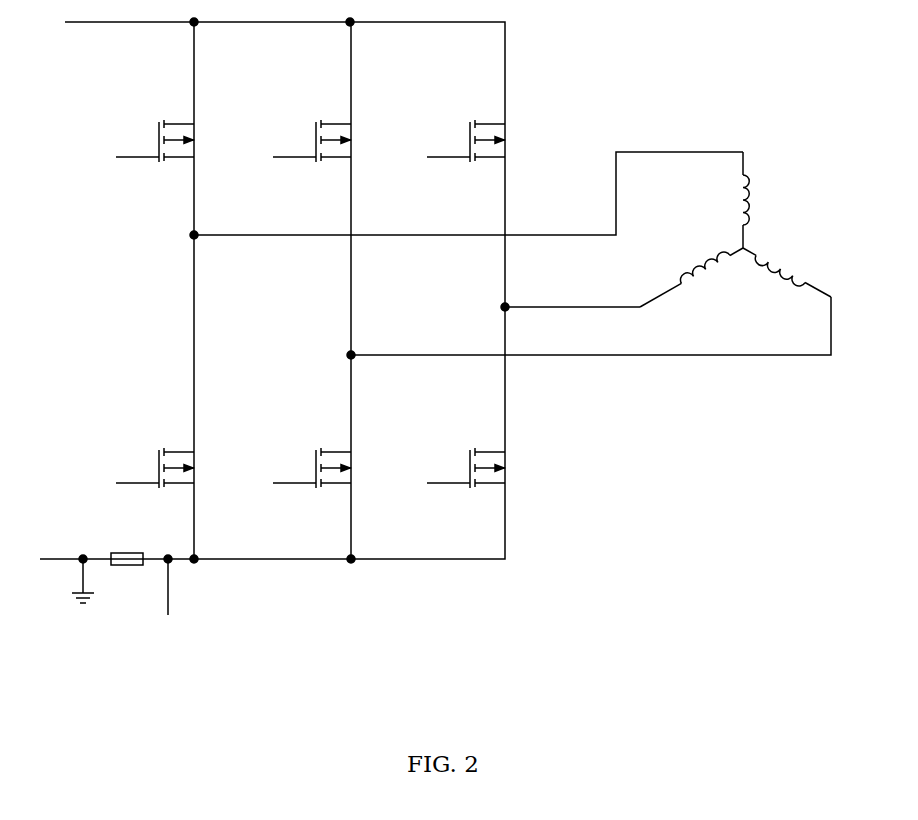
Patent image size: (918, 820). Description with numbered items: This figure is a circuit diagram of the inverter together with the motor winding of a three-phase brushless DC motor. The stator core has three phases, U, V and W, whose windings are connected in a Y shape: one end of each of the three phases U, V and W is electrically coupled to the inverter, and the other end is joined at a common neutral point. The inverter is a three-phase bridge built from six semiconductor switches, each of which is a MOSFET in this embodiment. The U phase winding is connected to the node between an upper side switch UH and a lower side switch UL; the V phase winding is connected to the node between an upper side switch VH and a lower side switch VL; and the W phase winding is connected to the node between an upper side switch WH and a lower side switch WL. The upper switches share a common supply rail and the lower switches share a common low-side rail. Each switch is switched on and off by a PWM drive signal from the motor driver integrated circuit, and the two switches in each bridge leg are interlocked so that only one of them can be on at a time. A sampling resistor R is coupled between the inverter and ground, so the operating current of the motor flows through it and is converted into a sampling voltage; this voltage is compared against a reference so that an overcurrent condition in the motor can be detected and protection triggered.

The upper side switch UH is at (149, 140).
The upper side switch VH is at (306, 140).
The upper side switch WH is at (460, 140).
The lower side switch UL is at (150, 466).
The lower side switch VL is at (307, 466).
The lower side switch WL is at (461, 466).
The sampling resistor R is at (127, 543).
The U phase U is at (759, 200).
The V phase V is at (787, 272).
The W phase W is at (691, 274).